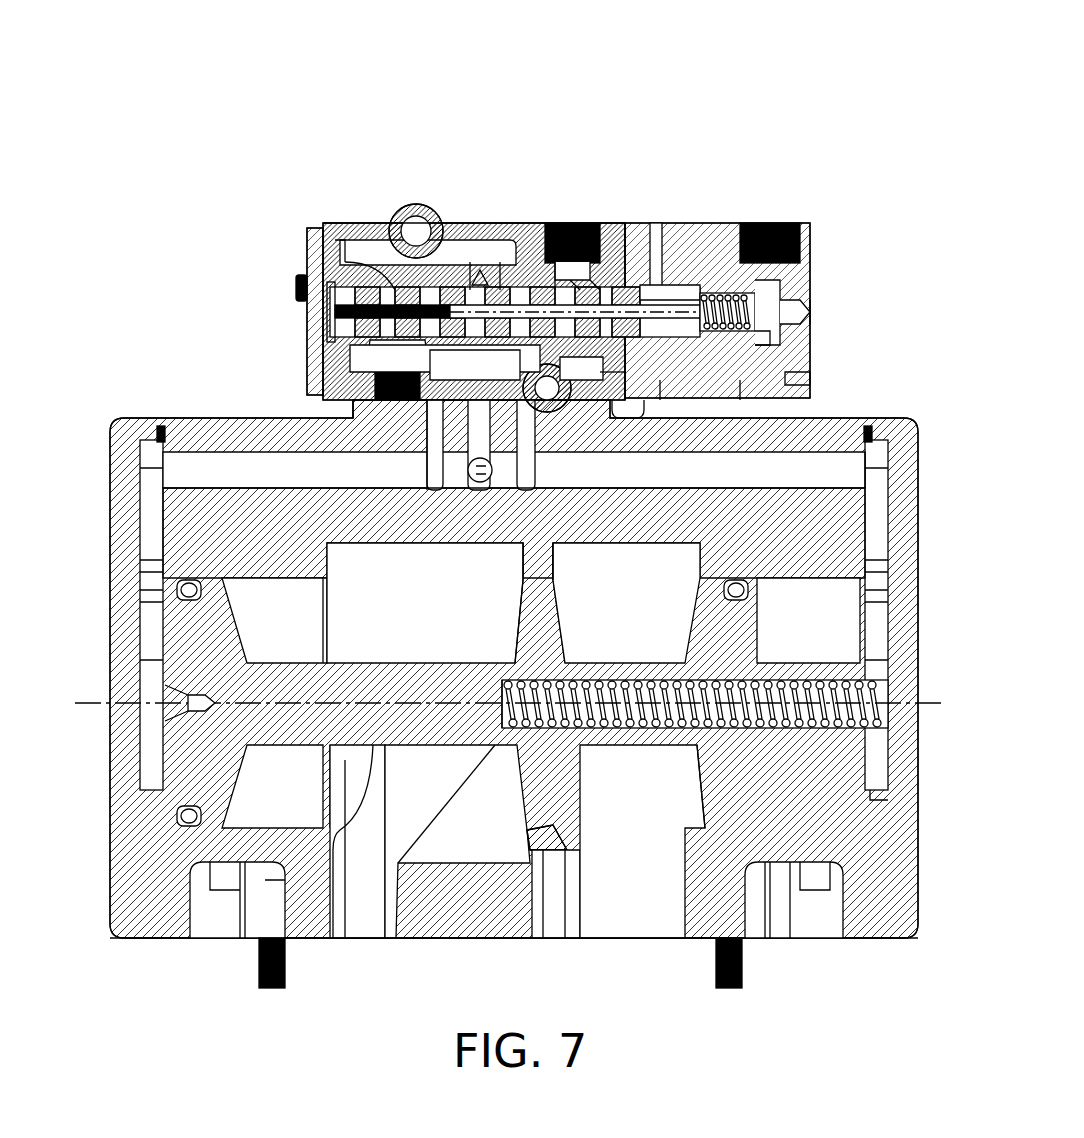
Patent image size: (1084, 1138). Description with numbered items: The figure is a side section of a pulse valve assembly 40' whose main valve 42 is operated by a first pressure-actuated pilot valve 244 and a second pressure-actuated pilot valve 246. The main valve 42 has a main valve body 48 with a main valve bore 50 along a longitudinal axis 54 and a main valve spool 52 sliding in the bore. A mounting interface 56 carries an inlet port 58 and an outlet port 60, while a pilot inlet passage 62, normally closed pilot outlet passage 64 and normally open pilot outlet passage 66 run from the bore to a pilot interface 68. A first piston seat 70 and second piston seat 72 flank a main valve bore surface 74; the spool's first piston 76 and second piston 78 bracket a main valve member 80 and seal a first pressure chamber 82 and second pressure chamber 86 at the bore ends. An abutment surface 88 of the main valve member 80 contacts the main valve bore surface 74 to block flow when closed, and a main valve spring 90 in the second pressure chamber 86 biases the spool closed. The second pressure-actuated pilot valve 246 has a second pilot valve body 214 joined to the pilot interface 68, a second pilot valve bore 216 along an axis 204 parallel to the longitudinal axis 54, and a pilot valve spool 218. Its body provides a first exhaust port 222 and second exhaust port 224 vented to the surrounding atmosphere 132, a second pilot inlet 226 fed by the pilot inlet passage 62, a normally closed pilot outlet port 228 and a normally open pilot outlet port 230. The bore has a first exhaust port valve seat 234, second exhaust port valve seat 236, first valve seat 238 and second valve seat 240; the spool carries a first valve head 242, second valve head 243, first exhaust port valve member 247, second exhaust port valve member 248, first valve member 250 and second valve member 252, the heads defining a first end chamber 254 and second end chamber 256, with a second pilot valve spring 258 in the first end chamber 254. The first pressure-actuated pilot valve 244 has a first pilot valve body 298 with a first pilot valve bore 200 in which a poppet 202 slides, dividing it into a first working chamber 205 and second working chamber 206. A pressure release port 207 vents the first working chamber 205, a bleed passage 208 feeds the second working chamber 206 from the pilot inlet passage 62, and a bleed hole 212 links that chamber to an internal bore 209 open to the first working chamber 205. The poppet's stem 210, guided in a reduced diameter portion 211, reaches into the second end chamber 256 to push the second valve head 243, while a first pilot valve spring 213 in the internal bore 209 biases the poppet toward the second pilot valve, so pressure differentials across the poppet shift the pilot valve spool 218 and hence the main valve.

The pulse valve assembly 40' is at (842, 36).
The main valve 42 is at (102, 549).
The main valve body 48 is at (190, 525).
The main valve bore 50 is at (667, 645).
The main valve spool 52 is at (385, 665).
The longitudinal axis 54 is at (95, 715).
The mounting interface 56 is at (455, 945).
The inlet port 58 is at (355, 905).
The outlet port 60 is at (633, 905).
The pilot inlet passage 62 is at (470, 460).
The normally closed pilot outlet passage 64 is at (190, 468).
The normally open pilot outlet passage 66 is at (880, 460).
The pilot interface 68 is at (548, 405).
The first piston seat 70 is at (245, 565).
The second piston seat 72 is at (790, 565).
The main valve bore surface 74 is at (540, 567).
The first piston 76 is at (225, 780).
The second piston 78 is at (690, 785).
The main valve member 80 is at (545, 773).
The first pressure chamber 82 is at (150, 650).
The second pressure chamber 86 is at (843, 808).
The abutment surface 88 is at (553, 833).
The main valve spring 90 is at (825, 727).
The surrounding atmosphere 132 is at (412, 126).
The first pilot valve bore 200 is at (790, 383).
The poppet 202 is at (800, 290).
The axis 204 is at (312, 305).
The first working chamber 205 is at (760, 330).
The second working chamber 206 is at (700, 325).
The pressure release port 207 is at (790, 240).
The bleed passage 208 is at (655, 290).
The internal bore 209 is at (727, 340).
The stem 210 is at (663, 337).
The reduced diameter portion 211 is at (700, 343).
The bleed hole 212 is at (690, 300).
The first pilot valve spring 213 is at (790, 315).
The second pilot valve body 214 is at (340, 345).
The second pilot valve bore 216 is at (340, 268).
The pilot valve spool 218 is at (455, 300).
The first exhaust port 222 is at (345, 365).
The second exhaust port 224 is at (560, 262).
The second pilot inlet 226 is at (362, 450).
The normally closed pilot outlet port 228 is at (395, 285).
The normally open pilot outlet port 230 is at (508, 300).
The first exhaust port valve seat 234 is at (385, 265).
The second exhaust port valve seat 236 is at (555, 290).
The first valve seat 238 is at (470, 310).
The second valve seat 240 is at (420, 210).
The first valve head 242 is at (330, 290).
The second valve head 243 is at (575, 300).
The first pressure-actuated pilot valve 244 is at (815, 300).
The second pressure-actuated pilot valve 246 is at (330, 230).
The first exhaust port valve member 247 is at (340, 250).
The second exhaust port valve member 248 is at (572, 360).
The first valve member 250 is at (350, 385).
The second valve member 252 is at (432, 455).
The first end chamber 254 is at (335, 330).
The second end chamber 256 is at (622, 345).
The second pilot valve spring 258 is at (300, 282).
The first pilot valve body 298 is at (780, 355).